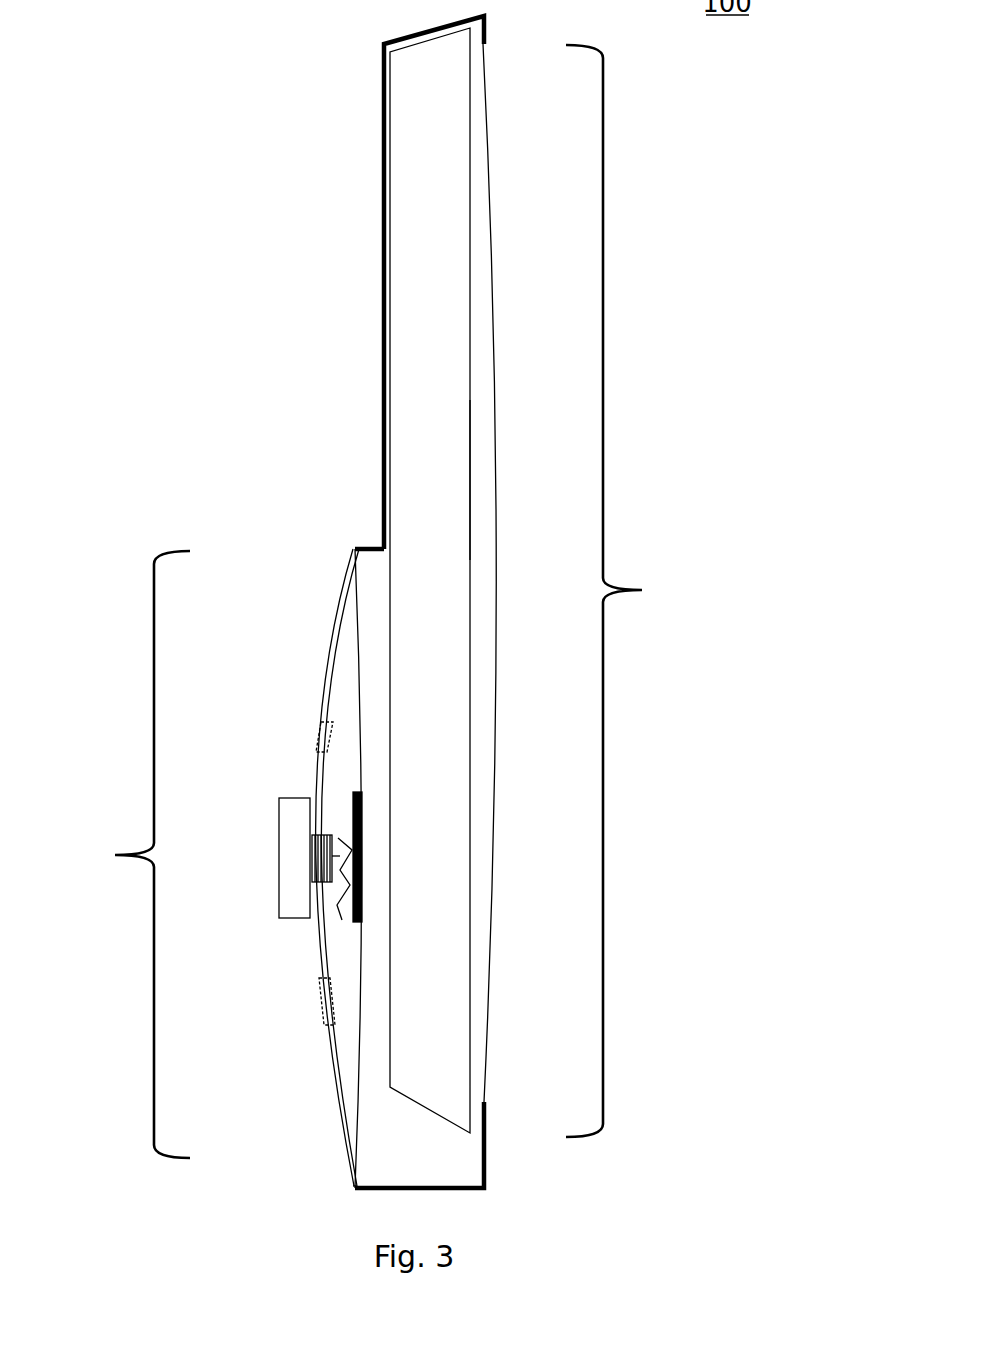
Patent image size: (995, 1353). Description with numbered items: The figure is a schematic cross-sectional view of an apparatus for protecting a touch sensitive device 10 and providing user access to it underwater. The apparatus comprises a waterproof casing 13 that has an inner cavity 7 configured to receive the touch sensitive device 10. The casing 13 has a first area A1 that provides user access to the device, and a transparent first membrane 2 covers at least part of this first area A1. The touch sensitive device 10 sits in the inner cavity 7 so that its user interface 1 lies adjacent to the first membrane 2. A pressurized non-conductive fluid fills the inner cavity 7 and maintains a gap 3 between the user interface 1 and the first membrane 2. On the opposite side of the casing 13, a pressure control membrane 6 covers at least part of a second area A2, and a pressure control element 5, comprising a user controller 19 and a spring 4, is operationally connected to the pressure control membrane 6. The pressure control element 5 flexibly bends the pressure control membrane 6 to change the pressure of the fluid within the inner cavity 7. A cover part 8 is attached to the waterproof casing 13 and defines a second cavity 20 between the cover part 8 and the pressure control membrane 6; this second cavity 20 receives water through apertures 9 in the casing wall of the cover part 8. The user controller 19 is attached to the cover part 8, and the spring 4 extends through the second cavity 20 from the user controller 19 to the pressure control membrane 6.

The user interface 1 is at (472, 247).
The transparent first membrane 2 is at (493, 736).
The gap 3 is at (482, 492).
The spring 4 is at (345, 873).
The pressure control element 5 is at (282, 811).
The pressure control membrane 6 is at (360, 653).
The inner cavity 7 is at (373, 1152).
The cover part 8 is at (347, 597).
The apertures 9 is at (325, 1003).
The touch sensitive device 10 is at (403, 165).
The waterproof casing 13 is at (382, 46).
The user controller 19 is at (279, 815).
The second cavity 20 is at (348, 1038).
The first area A1 is at (628, 591).
The second area A2 is at (128, 854).